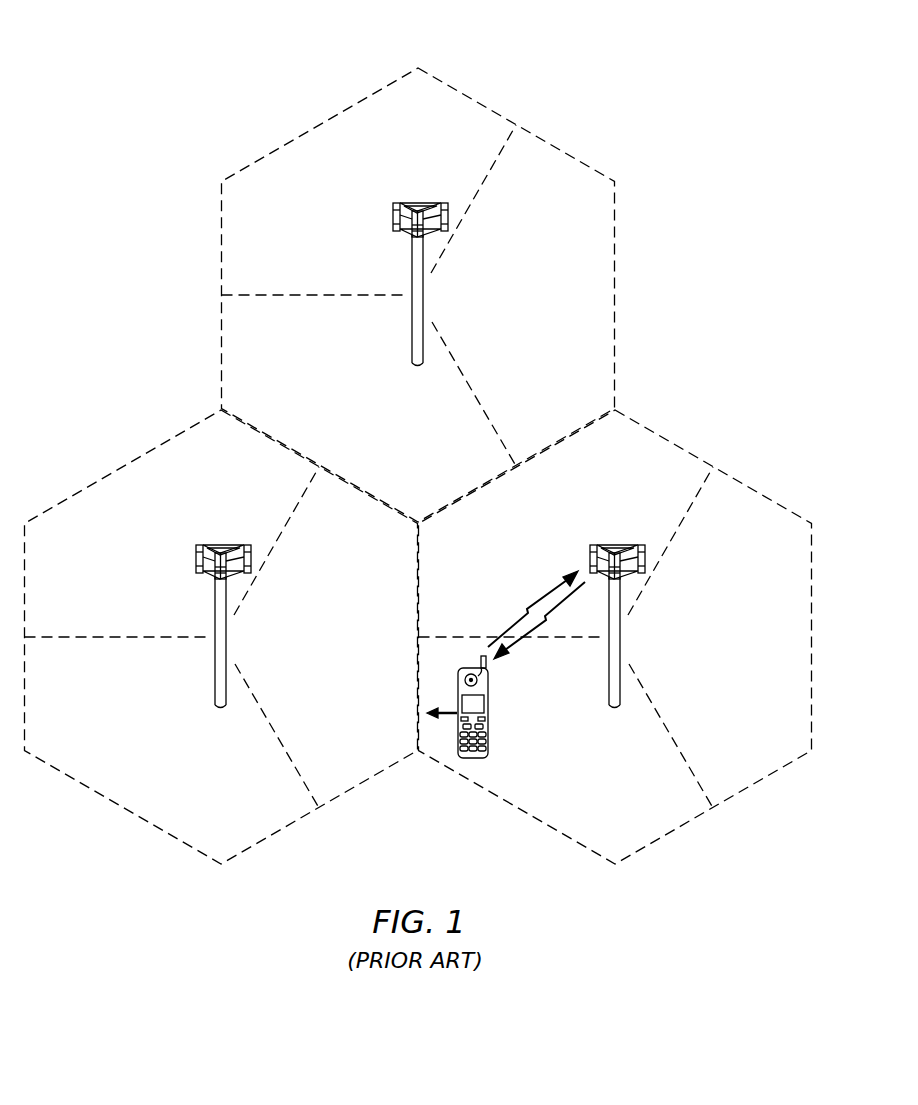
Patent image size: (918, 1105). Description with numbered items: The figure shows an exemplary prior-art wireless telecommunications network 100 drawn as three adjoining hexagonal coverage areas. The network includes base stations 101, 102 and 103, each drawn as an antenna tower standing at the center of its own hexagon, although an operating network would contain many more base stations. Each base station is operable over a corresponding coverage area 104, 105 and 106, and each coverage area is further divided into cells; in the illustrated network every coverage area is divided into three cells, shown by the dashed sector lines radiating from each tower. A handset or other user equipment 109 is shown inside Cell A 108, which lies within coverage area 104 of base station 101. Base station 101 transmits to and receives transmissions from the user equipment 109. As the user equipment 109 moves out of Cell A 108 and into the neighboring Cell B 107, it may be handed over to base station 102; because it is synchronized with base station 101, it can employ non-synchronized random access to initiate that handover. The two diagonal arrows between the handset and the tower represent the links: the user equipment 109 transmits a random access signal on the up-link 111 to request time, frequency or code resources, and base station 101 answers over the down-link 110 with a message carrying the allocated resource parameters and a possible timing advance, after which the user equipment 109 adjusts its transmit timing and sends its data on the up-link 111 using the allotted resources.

The wireless telecommunications network 100 is at (602, 74).
The base station 101 is at (621, 637).
The base station 102 is at (216, 668).
The base station 103 is at (411, 326).
The coverage area 104 is at (751, 787).
The coverage area 105 is at (122, 808).
The coverage area 106 is at (617, 296).
The Cell B 107 is at (330, 750).
The Cell A 108 is at (580, 817).
The user equipment 109 is at (488, 723).
The down-link 110 is at (541, 630).
The up-link 111 is at (550, 590).